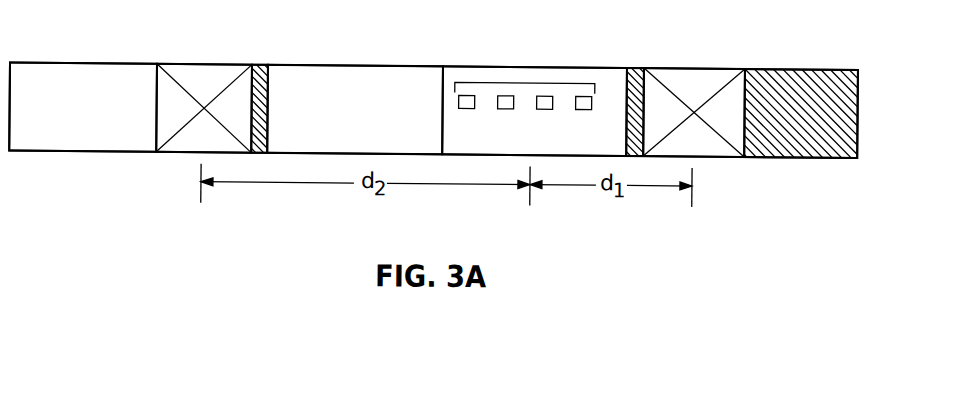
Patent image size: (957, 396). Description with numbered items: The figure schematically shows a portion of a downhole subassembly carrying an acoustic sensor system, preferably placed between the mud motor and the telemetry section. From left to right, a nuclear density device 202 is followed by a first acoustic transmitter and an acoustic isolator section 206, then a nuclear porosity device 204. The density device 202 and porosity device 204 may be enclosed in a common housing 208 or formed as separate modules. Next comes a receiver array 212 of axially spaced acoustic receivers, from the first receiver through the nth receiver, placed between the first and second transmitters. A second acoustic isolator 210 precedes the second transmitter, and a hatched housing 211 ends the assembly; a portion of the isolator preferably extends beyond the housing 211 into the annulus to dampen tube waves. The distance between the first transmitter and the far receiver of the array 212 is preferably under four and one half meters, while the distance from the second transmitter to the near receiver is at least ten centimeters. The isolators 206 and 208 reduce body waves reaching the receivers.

The nuclear density device 202 is at (83, 76).
The nuclear porosity device 204 is at (355, 78).
The acoustic isolator section 206 is at (212, 82).
The common housing 208 is at (523, 79).
The second acoustic isolator 210 is at (656, 86).
The housing 211 is at (841, 127).
The receiver array 212 is at (530, 74).